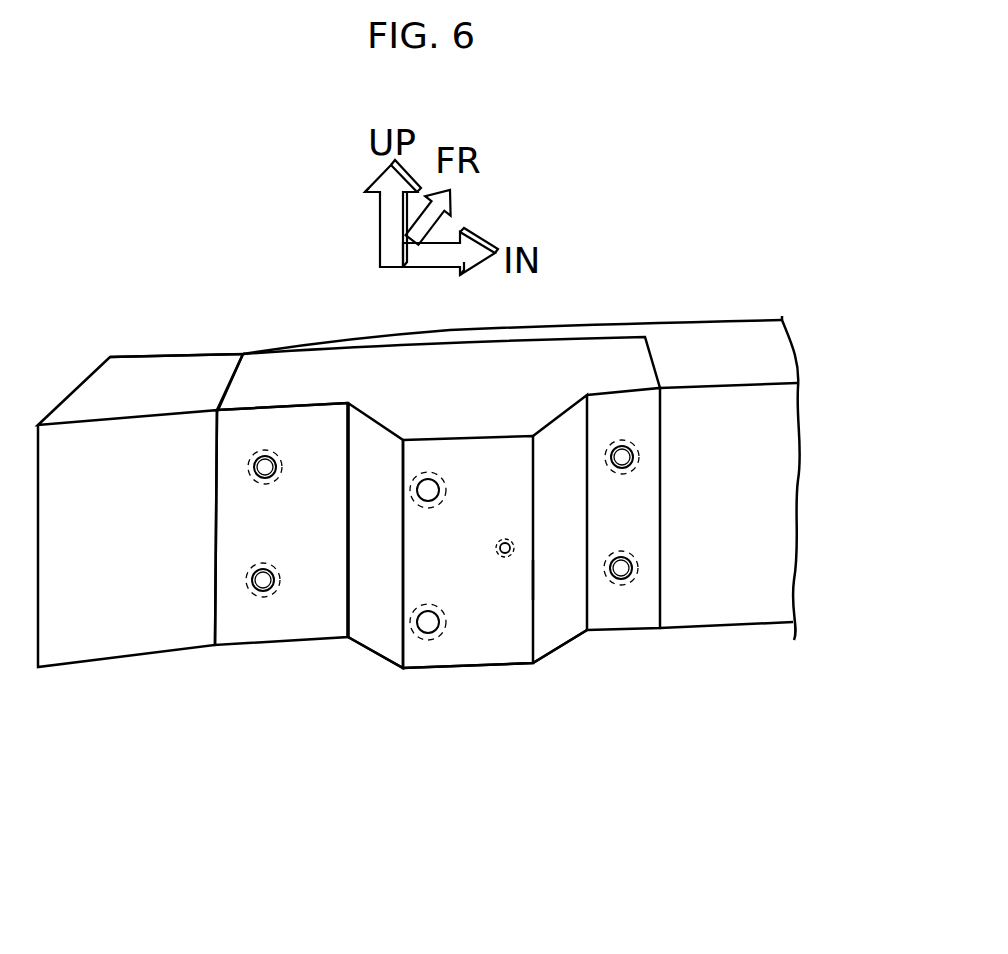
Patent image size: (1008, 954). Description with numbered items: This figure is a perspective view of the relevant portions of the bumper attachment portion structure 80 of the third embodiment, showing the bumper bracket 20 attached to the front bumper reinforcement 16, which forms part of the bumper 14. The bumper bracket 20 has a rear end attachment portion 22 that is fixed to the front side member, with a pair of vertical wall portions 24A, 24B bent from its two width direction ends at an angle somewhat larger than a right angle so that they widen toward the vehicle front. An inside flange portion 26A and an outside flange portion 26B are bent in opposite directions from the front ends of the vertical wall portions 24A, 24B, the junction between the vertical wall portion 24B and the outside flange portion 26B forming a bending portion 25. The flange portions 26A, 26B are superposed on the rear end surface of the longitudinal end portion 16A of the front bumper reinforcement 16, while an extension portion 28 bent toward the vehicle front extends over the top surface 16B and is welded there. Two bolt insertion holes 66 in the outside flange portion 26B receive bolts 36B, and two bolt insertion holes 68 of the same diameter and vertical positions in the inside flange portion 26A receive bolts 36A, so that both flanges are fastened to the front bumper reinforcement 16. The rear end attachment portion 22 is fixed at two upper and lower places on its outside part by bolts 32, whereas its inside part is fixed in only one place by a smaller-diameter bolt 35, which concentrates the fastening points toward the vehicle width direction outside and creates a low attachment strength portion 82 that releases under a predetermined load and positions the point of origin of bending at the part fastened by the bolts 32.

The bumper 14 is at (782, 293).
The front bumper reinforcement 16 is at (725, 316).
The longitudinal direction end portion 16A is at (210, 347).
The top surface 16B is at (770, 357).
The bumper bracket 20 is at (507, 684).
The rear end attachment portion 22 is at (452, 652).
The vertical wall portion 24A is at (540, 647).
The vertical wall portion 24B is at (378, 640).
The bending portion 25 is at (347, 548).
The inside flange portion 26A is at (635, 620).
The outside flange portion 26B is at (283, 622).
The extension portion 28 is at (388, 367).
The bolt 32 is at (443, 477).
The bolt 35 is at (497, 542).
The bolt 36A is at (630, 445).
The bolt 36B is at (248, 468).
The bolt insertion hole 66 is at (263, 577).
The bolt insertion hole 68 is at (633, 462).
The bumper attachment portion structure 80 is at (557, 746).
The low attachment strength portion 82 is at (524, 572).